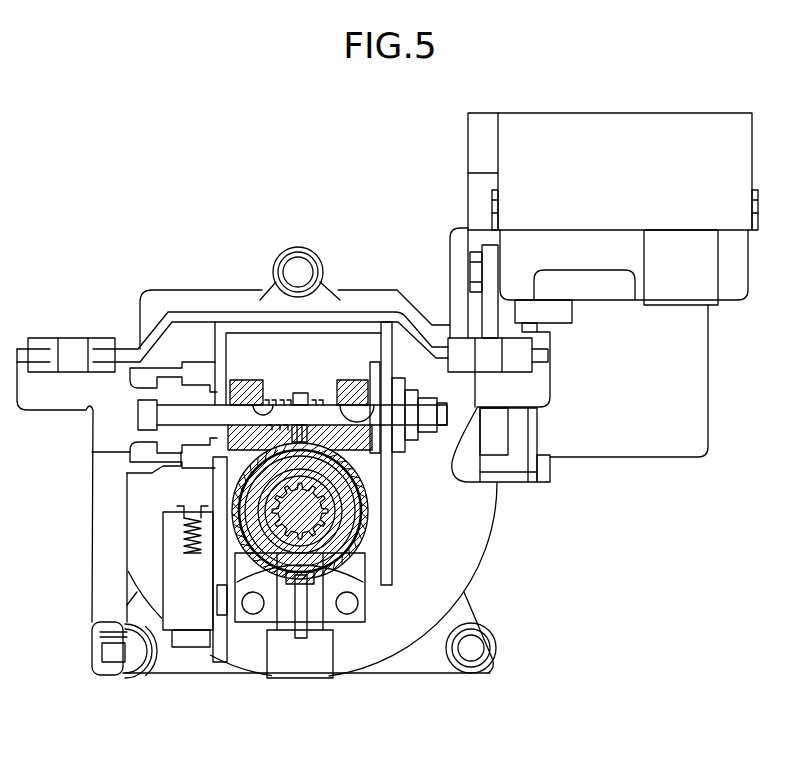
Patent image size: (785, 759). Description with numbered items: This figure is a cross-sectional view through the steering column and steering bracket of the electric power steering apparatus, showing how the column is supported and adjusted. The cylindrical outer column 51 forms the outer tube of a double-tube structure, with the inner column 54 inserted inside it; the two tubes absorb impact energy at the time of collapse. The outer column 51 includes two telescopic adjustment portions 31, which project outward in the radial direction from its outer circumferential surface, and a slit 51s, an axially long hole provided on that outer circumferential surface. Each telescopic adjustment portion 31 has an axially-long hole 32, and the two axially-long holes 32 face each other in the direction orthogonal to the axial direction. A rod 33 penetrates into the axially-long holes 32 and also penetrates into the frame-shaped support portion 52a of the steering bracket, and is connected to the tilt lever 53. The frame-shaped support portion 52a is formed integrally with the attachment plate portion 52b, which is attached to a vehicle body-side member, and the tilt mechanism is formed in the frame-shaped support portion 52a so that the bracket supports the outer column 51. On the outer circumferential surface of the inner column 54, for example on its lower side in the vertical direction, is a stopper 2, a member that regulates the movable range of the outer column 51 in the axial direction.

The stopper 2 is at (347, 648).
The telescopic adjustment portion 31 is at (249, 380).
The axially-long hole 32 is at (277, 393).
The rod 33 is at (300, 392).
The outer column 51 is at (288, 575).
The slit 51s is at (304, 430).
The frame-shaped support portion 52a is at (388, 557).
The attachment plate portion 52b is at (186, 310).
The tilt lever 53 is at (100, 537).
The inner column 54 is at (311, 575).